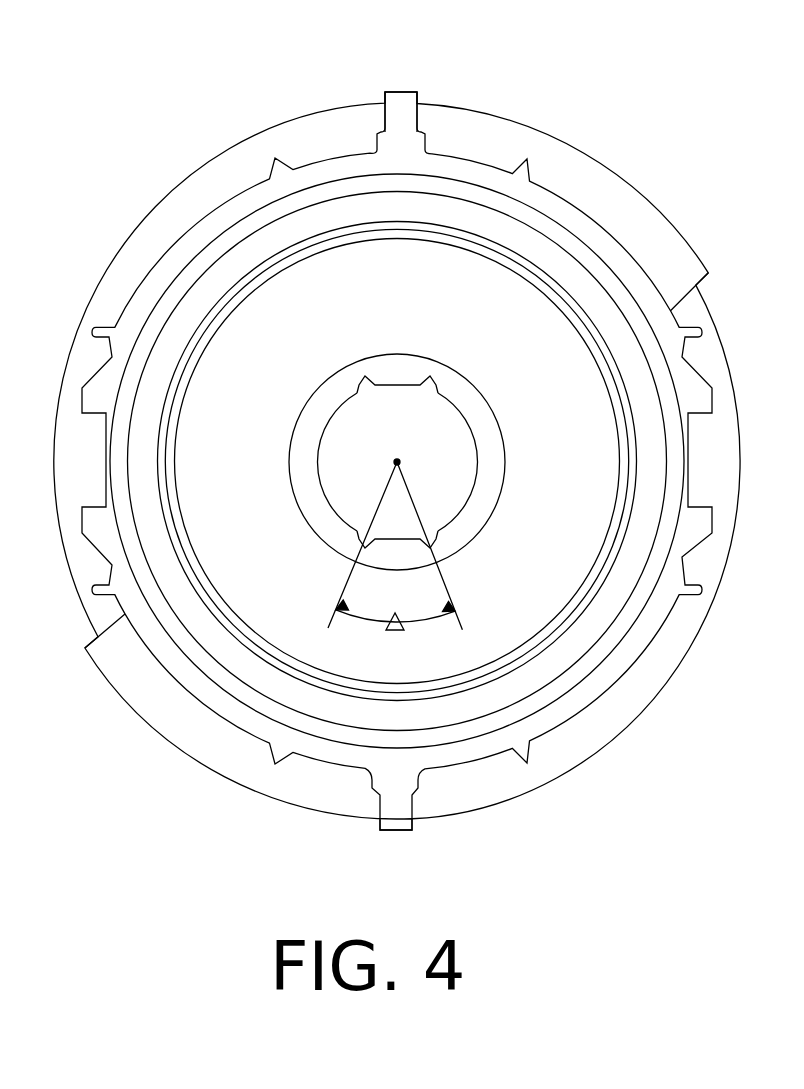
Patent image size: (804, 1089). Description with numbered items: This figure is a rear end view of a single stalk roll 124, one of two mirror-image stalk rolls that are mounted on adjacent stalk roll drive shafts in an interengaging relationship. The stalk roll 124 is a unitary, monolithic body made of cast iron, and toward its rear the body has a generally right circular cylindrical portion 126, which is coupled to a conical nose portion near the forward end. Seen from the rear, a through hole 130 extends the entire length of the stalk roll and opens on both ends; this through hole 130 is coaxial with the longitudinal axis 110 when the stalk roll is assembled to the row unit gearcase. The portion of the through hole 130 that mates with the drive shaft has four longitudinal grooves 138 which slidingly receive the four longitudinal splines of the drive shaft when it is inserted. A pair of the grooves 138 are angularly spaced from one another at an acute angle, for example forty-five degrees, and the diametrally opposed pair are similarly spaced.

The stalk roll 124 is at (603, 122).
The right circular cylindrical portion 126 is at (313, 113).
The through hole 130 is at (527, 575).
The longitudinal axis 110 is at (397, 462).
The longitudinal grooves 138 is at (360, 386).